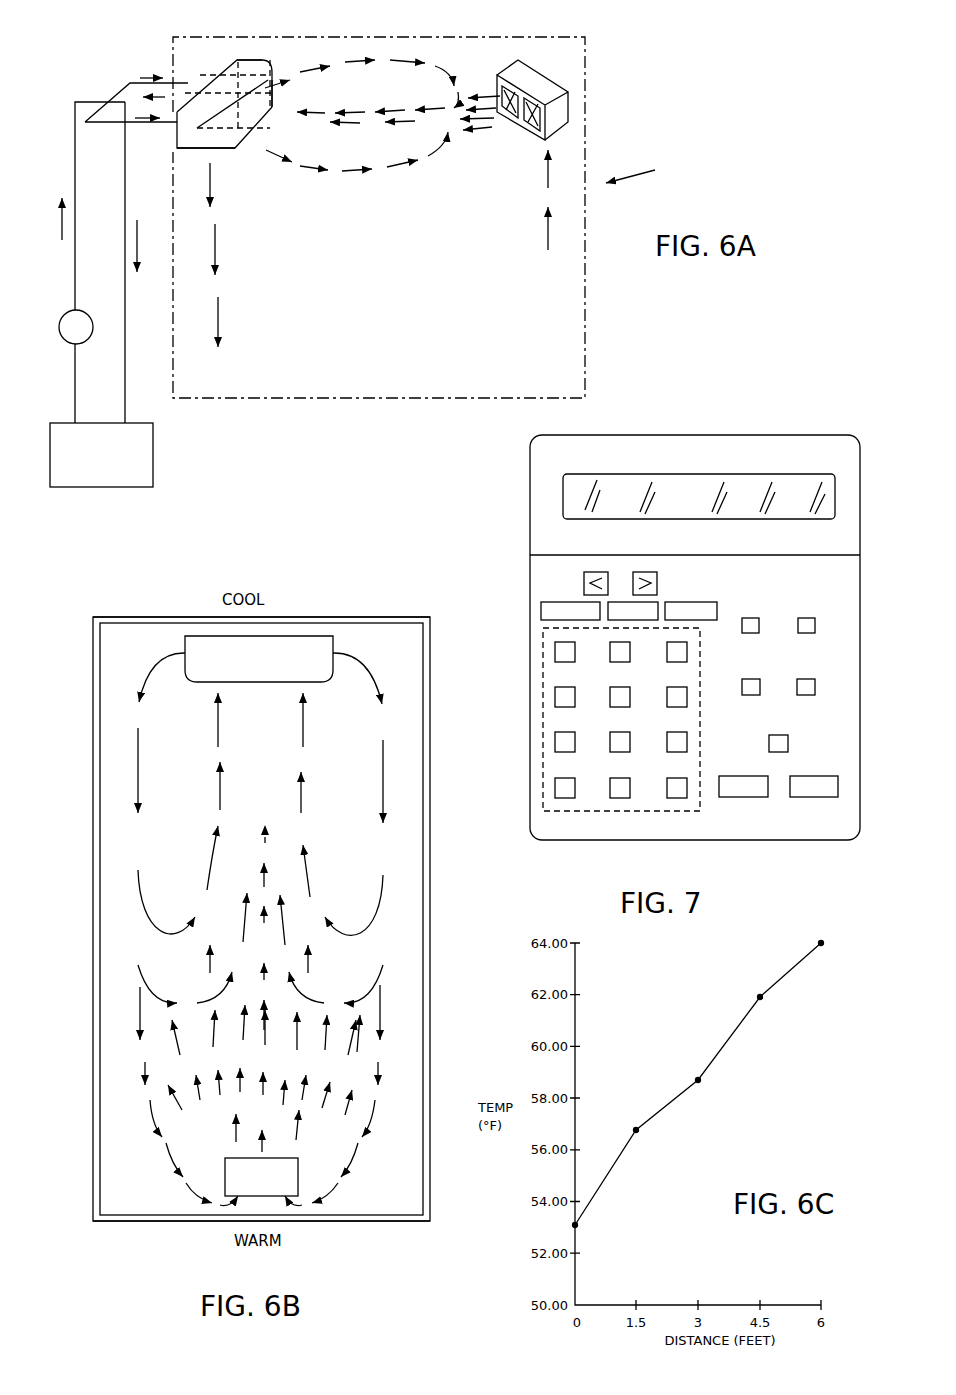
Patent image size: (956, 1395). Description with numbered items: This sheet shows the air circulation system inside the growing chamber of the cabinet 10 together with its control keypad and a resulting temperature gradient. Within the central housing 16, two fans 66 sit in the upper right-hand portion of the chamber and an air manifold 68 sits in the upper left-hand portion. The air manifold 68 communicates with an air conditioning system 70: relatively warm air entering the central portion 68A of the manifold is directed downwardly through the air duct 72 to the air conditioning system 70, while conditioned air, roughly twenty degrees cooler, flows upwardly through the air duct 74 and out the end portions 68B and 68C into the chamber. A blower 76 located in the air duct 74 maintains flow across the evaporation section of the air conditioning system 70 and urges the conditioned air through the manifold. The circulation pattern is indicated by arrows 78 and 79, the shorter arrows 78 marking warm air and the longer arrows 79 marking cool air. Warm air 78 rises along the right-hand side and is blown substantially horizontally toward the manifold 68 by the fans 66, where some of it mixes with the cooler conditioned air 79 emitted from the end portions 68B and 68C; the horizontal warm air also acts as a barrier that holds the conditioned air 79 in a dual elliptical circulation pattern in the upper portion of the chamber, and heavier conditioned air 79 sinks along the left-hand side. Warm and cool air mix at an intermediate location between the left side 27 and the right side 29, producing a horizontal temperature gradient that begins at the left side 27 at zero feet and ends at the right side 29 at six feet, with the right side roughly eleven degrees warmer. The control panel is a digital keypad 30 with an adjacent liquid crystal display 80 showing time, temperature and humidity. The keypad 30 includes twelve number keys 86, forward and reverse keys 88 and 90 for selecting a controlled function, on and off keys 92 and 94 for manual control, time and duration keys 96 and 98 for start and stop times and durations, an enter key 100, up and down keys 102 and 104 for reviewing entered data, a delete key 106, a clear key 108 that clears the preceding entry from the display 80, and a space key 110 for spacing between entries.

In FIG. 6A, the cabinet 10 is at (384, 30).
In FIG. 6B, the cabinet 10 is at (302, 565).
In FIG. 6A, the central housing 16 is at (643, 172).
In FIG. 6B, the left side 27 is at (156, 617).
In FIG. 6B, the right side 29 is at (148, 1221).
In FIG. 7, the digital keypad 30 is at (727, 423).
In FIG. 6A, the fans 66 is at (528, 128).
In FIG. 6B, the fans 66 is at (298, 1156).
In FIG. 6A, the air manifold 68 is at (244, 72).
In FIG. 6B, the air manifold 68 is at (310, 636).
In FIG. 6A, the central portion 68A is at (270, 118).
In FIG. 6A, the end portion 68B is at (222, 148).
In FIG. 6A, the end portion 68C is at (300, 92).
In FIG. 6A, the air conditioning system 70 is at (153, 458).
In FIG. 6A, the air duct 72 is at (125, 322).
In FIG. 6A, the air duct 74 is at (75, 270).
In FIG. 6A, the blower 76 is at (80, 335).
In FIG. 6A, the warm air arrows 78 is at (172, 97).
In FIG. 6B, the warm air arrows 78 is at (258, 834).
In FIG. 6A, the cool air arrows 79 is at (152, 76).
In FIG. 6B, the cool air arrows 79 is at (300, 735).
In FIG. 7, the liquid crystal display 80 is at (751, 482).
In FIG. 7, the number keys 86 is at (555, 739).
In FIG. 7, the forward key 88 is at (657, 580).
In FIG. 7, the reverse key 90 is at (586, 588).
In FIG. 7, the on key 92 is at (742, 632).
In FIG. 7, the off key 94 is at (815, 630).
In FIG. 7, the time key 96 is at (750, 692).
In FIG. 7, the duration key 98 is at (812, 695).
In FIG. 7, the enter key 100 is at (788, 742).
In FIG. 7, the up key 102 is at (728, 797).
In FIG. 7, the down key 104 is at (798, 797).
In FIG. 7, the delete key 106 is at (541, 607).
In FIG. 7, the clear key 108 is at (655, 620).
In FIG. 7, the space key 110 is at (710, 602).